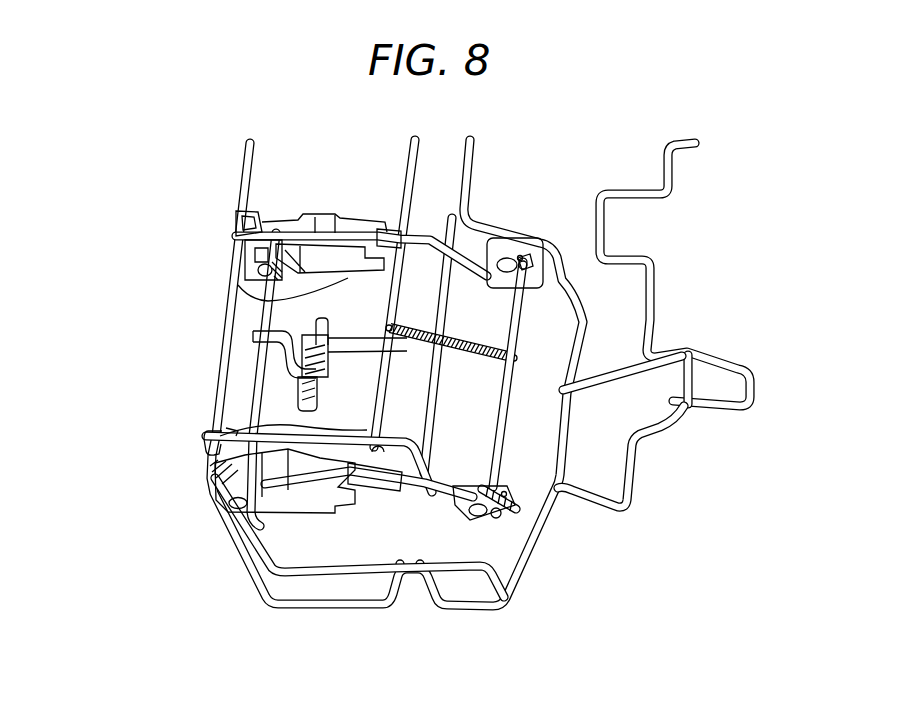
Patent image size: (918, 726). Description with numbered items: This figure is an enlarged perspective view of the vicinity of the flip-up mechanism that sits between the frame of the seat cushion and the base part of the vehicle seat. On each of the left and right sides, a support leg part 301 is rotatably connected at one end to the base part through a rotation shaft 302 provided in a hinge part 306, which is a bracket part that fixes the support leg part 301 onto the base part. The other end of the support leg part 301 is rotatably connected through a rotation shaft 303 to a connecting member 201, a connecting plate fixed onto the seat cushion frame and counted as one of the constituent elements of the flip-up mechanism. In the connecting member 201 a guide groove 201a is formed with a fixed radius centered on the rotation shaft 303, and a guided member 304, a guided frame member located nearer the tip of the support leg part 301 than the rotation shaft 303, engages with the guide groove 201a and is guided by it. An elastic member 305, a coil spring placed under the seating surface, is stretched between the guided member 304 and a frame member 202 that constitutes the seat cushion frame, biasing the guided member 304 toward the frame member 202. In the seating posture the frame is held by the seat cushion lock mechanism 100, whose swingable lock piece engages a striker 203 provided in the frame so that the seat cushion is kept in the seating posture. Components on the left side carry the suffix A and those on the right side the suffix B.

The seat cushion lock mechanism 100 is at (296, 397).
The connecting member 201 is at (500, 240).
The guide groove 201a is at (522, 259).
The frame member 202 is at (226, 430).
The striker 203 is at (253, 346).
The support leg part 301 is at (388, 225).
The rotation shaft 302 is at (245, 281).
The rotation shaft 303 is at (530, 276).
The guided member 304 is at (643, 433).
The elastic member 305 is at (445, 318).
The hinge part 306 is at (268, 301).